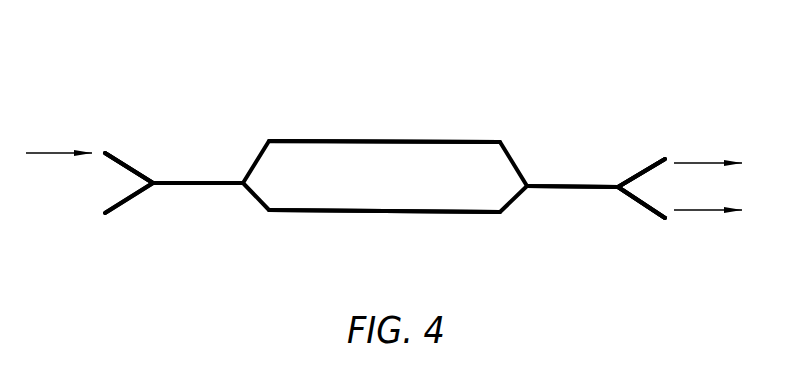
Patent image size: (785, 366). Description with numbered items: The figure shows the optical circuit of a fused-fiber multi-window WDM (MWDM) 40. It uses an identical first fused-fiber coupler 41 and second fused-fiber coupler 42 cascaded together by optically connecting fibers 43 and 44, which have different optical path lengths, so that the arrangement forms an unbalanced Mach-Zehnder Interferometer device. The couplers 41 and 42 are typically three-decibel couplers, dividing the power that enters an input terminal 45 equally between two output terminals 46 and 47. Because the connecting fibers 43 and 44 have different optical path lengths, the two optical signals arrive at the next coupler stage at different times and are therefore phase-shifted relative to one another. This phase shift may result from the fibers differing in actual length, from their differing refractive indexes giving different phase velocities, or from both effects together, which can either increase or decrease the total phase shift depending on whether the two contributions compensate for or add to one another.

The fused-fiber multi-window WDM (MWDM) 40 is at (298, 113).
The first fused-fiber coupler 41 is at (200, 155).
The second fused-fiber coupler 42 is at (573, 162).
The connecting fiber 43 is at (435, 139).
The connecting fiber 44 is at (435, 213).
The input terminal 45 is at (118, 157).
The output terminal 46 is at (655, 158).
The output terminal 47 is at (653, 214).